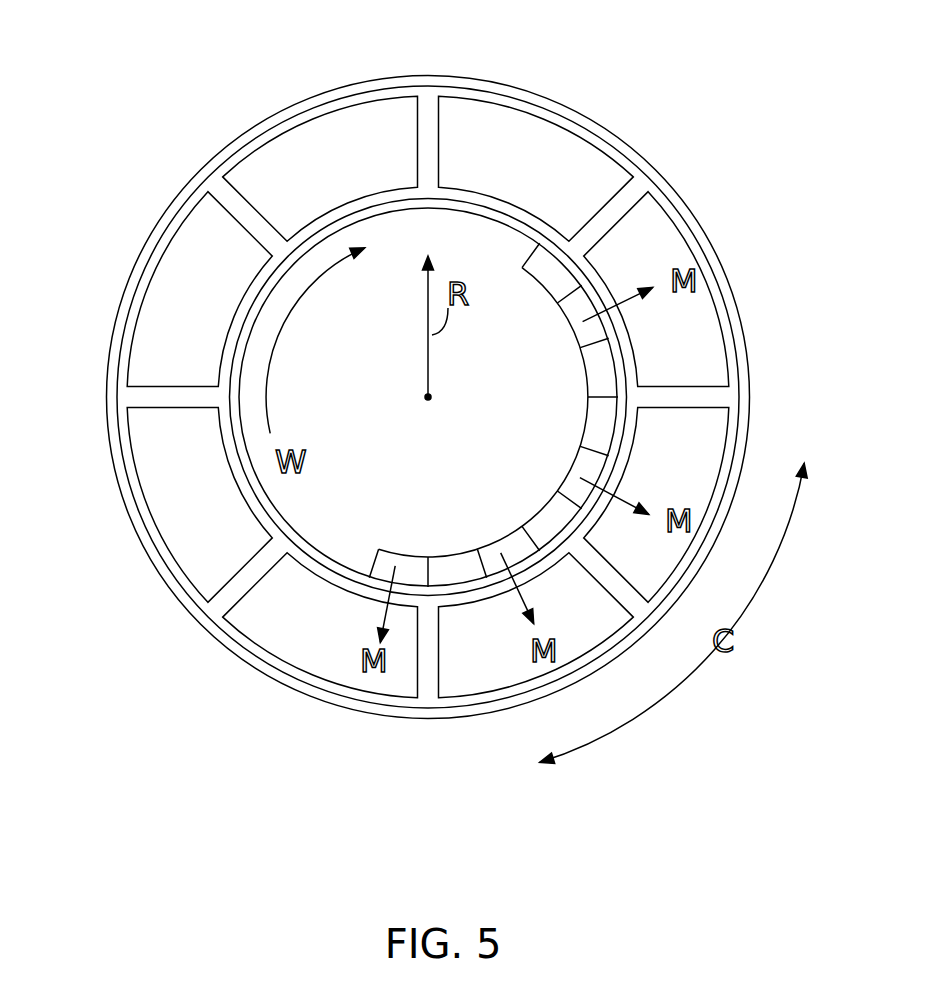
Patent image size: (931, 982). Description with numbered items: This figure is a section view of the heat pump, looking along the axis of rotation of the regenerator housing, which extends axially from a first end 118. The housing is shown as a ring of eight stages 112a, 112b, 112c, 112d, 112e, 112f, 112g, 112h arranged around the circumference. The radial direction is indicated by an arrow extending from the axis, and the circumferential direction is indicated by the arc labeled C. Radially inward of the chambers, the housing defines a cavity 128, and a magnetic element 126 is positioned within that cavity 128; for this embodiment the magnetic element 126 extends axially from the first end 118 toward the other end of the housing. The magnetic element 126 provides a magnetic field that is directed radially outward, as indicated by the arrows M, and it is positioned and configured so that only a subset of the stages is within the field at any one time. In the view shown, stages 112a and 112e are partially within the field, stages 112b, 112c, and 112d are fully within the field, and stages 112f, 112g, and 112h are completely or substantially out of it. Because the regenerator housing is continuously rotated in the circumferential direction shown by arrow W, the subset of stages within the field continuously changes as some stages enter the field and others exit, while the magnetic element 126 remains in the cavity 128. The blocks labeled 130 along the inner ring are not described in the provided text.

The stage 112a is at (503, 142).
The stage 112b is at (690, 320).
The stage 112c is at (693, 438).
The stage 112d is at (480, 665).
The stage 112e is at (290, 625).
The stage 112f is at (160, 463).
The stage 112g is at (195, 250).
The stage 112h is at (342, 142).
The first end 118 is at (696, 129).
The magnetic element 126 is at (382, 550).
The cavity 128 is at (325, 503).
The magnets 130 is at (562, 281).